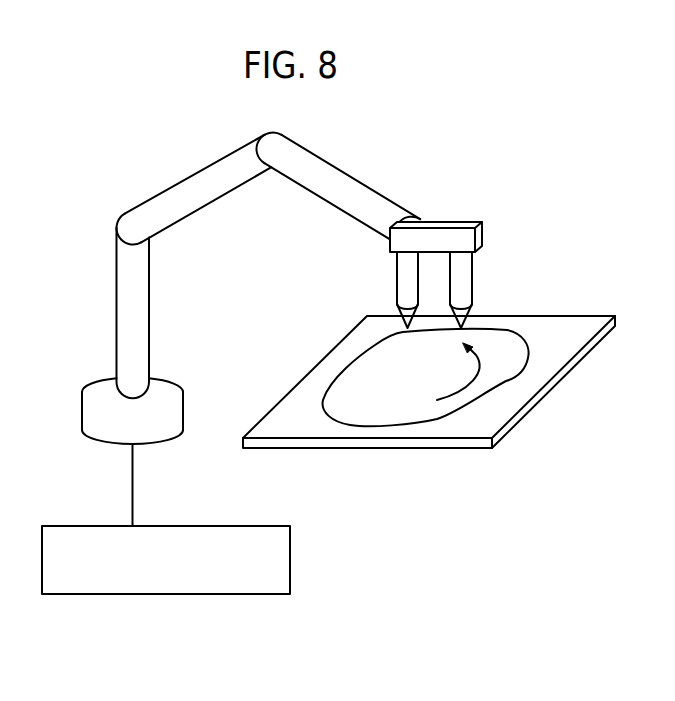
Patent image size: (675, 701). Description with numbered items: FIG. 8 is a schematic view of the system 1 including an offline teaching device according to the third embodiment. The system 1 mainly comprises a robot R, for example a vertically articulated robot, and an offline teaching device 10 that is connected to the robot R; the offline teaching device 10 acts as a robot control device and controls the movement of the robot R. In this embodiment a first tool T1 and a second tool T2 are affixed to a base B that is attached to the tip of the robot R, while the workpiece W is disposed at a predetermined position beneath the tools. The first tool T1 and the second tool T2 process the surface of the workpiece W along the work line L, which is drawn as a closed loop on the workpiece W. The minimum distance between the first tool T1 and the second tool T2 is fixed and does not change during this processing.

The system 1 is at (340, 340).
The robot R is at (130, 316).
The base B is at (453, 240).
The first tool T1 is at (405, 283).
The second tool T2 is at (463, 268).
The workpiece W is at (443, 432).
The work line L is at (508, 379).
The offline teaching device 10 is at (290, 568).